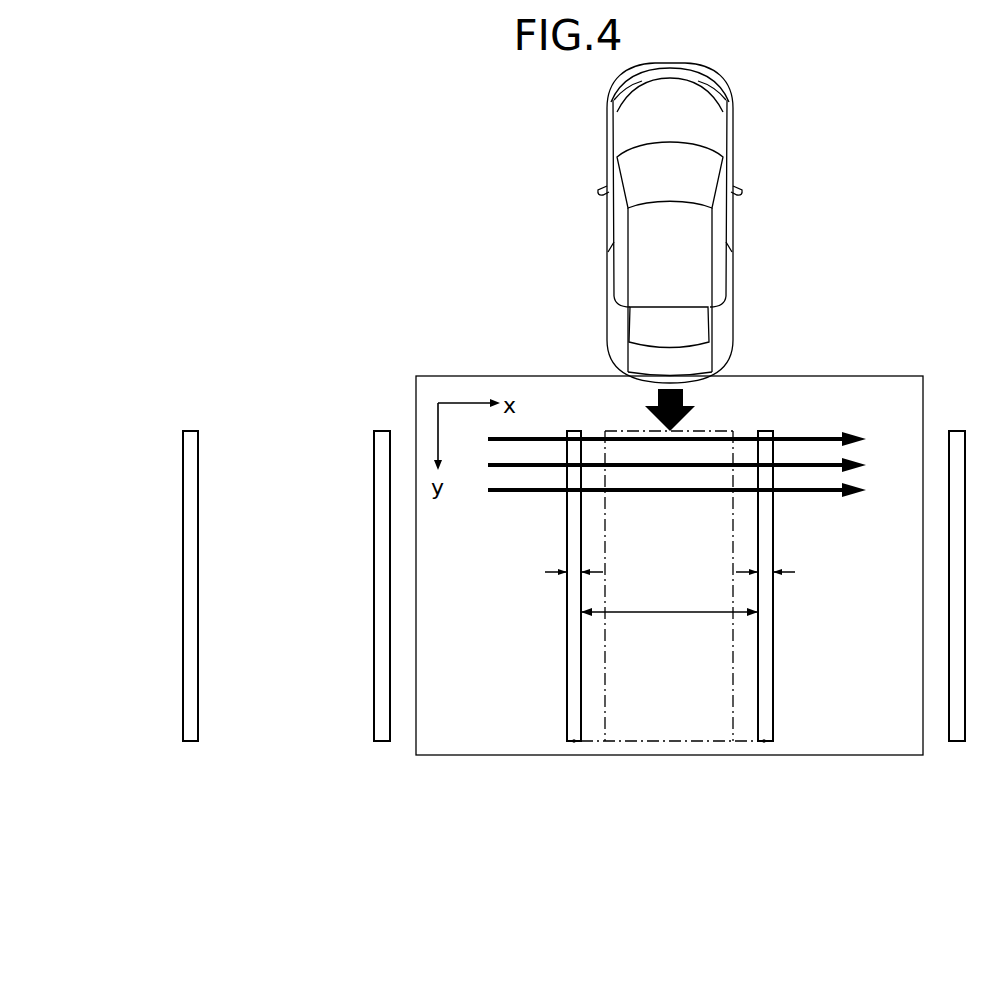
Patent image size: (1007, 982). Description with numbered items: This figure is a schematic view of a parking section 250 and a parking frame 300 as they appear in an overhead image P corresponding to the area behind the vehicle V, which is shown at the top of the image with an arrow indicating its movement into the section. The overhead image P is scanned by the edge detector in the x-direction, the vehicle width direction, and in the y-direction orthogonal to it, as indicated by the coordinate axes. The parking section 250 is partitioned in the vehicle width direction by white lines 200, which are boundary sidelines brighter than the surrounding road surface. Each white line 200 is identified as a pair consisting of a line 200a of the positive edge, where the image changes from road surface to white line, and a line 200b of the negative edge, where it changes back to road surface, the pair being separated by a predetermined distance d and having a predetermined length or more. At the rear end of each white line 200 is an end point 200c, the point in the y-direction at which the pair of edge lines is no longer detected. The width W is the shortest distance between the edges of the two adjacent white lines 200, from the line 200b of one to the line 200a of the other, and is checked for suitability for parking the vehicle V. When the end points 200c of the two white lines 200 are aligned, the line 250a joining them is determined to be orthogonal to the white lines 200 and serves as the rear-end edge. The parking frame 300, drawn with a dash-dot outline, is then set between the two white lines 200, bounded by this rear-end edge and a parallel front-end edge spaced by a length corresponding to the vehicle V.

The white line 200 is at (192, 727).
The line of the positive edge 200a is at (567, 717).
The line of the negative edge 200b is at (582, 681).
The end point 200c is at (574, 742).
The parking section 250 is at (272, 452).
The line 250a is at (656, 742).
The parking frame 300 is at (630, 431).
The overhead image P is at (846, 390).
The vehicle V is at (735, 118).
The distance d is at (570, 571).
The width W is at (669, 601).